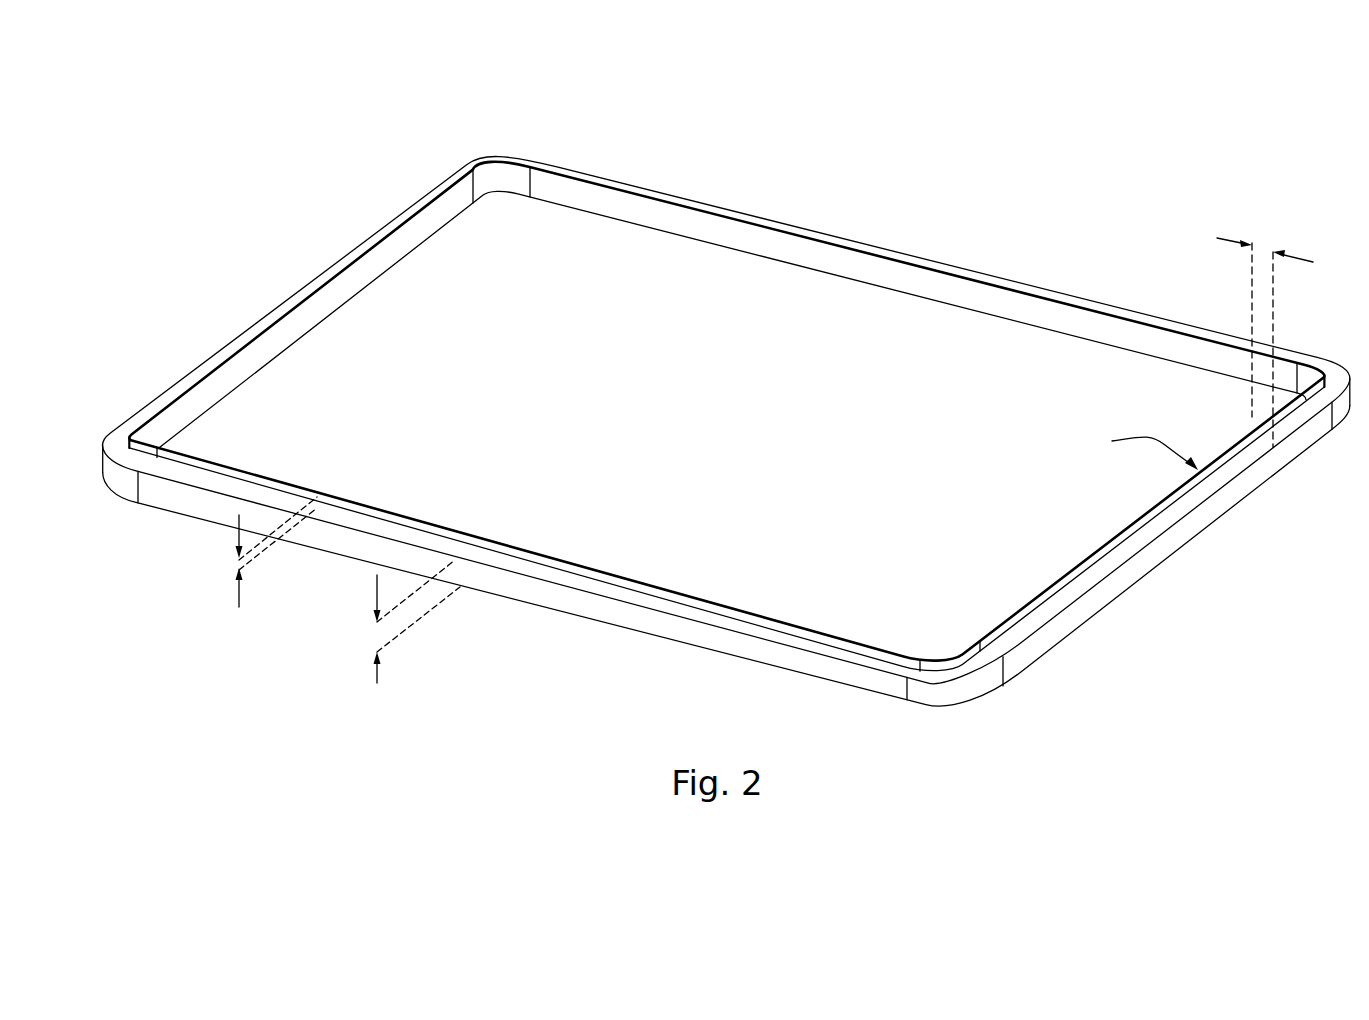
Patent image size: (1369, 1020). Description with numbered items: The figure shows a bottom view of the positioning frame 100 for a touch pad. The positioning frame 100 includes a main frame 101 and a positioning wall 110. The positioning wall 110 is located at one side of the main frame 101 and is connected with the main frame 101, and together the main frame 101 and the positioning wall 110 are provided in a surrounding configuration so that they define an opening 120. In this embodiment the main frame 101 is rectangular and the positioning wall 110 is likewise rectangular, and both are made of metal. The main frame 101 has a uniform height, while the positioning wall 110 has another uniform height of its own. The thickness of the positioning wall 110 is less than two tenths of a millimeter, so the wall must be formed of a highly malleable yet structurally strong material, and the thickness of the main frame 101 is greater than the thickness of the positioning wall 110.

The positioning frame 100 is at (103, 112).
The main frame 101 is at (123, 479).
The positioning wall 110 is at (381, 237).
The opening 120 is at (692, 418).